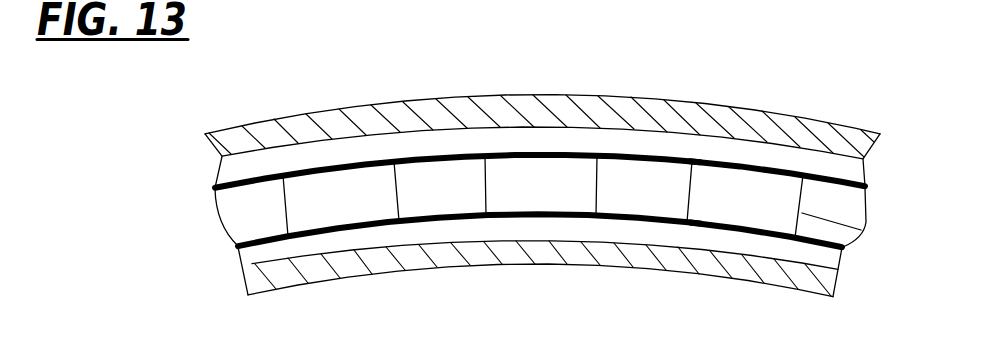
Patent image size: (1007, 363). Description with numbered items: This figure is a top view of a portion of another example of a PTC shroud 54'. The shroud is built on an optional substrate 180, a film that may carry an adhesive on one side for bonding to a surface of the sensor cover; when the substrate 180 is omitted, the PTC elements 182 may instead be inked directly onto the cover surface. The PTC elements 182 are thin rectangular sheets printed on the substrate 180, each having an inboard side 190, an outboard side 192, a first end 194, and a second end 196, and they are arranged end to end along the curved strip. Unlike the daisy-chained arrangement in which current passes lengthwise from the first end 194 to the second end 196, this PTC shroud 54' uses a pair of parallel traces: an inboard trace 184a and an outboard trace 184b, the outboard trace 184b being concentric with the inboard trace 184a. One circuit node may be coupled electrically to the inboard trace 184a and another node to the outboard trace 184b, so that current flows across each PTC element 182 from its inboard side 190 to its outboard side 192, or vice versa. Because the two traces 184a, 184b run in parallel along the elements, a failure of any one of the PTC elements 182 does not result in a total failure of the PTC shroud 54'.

The PTC shroud 54' is at (542, 164).
The substrate 180 is at (237, 142).
The PTC elements 182 is at (728, 200).
The inboard trace 184a is at (361, 226).
The outboard trace 184b is at (307, 168).
The inboard side 190 is at (746, 232).
The outboard side 192 is at (757, 168).
The first end 194 is at (690, 198).
The second end 196 is at (862, 232).